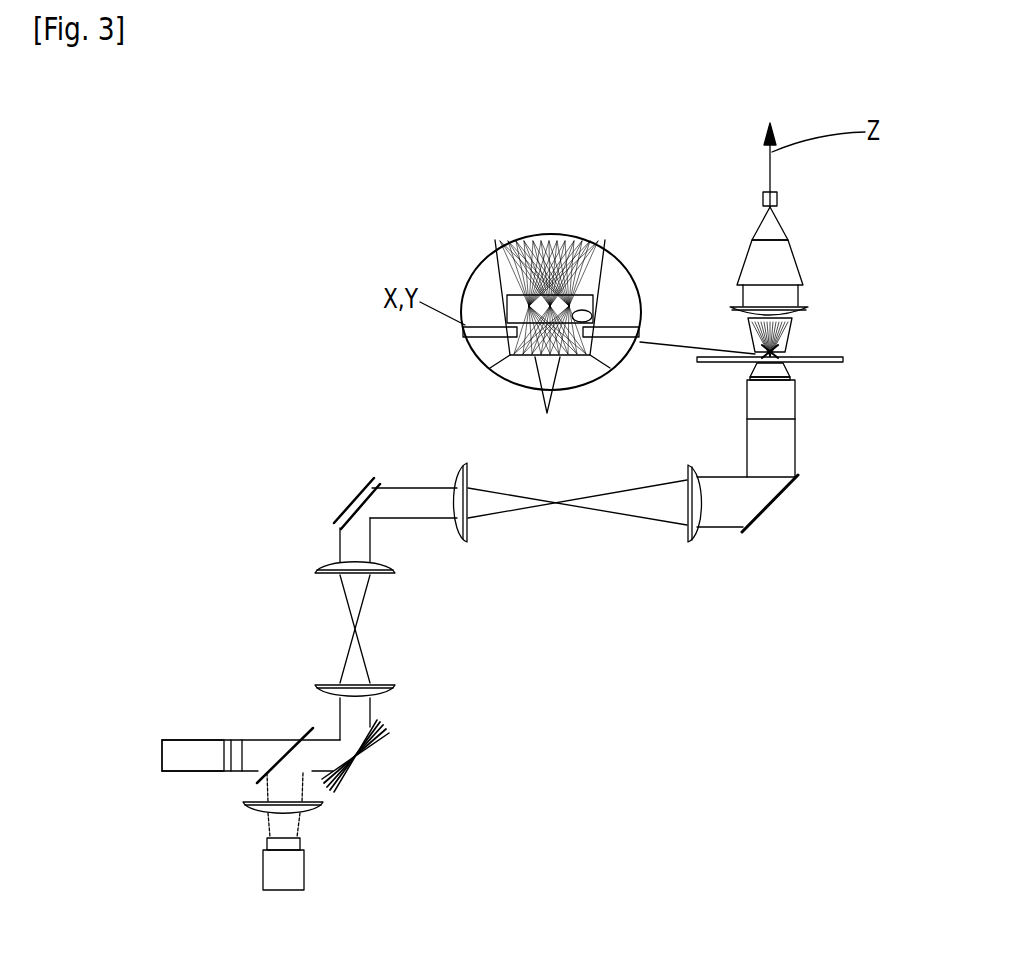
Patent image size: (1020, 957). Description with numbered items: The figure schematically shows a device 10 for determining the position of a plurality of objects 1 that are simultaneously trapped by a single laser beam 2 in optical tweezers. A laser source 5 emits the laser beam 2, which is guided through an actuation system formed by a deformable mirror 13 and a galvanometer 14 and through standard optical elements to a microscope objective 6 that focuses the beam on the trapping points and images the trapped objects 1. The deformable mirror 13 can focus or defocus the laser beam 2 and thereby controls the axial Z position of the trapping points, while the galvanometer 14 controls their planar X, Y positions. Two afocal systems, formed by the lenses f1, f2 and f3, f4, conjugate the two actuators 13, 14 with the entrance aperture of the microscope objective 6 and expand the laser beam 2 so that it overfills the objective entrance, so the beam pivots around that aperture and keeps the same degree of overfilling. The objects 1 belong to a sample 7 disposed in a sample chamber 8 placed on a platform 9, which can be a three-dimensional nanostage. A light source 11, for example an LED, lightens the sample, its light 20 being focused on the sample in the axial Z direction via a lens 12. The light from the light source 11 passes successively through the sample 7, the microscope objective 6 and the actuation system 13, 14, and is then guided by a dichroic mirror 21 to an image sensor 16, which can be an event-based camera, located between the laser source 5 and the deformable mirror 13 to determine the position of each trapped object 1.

The objects 1 is at (547, 401).
The laser beam 2 is at (787, 450).
The laser source 5 is at (183, 740).
The microscope objective 6 is at (792, 402).
The sample 7 is at (580, 287).
The sample chamber 8 is at (583, 305).
The platform 9 is at (838, 351).
The device 10 is at (732, 158).
The light source 11 is at (800, 197).
The lens 12 is at (807, 308).
The deformable mirror 13 is at (377, 771).
The galvanometer 14 is at (335, 486).
The image sensor 16 is at (247, 874).
The light 20 is at (273, 787).
The dichroic mirror 21 is at (308, 730).
The afocal system lens f1 is at (395, 688).
The afocal system lens f2 is at (395, 572).
The afocal system lens f3 is at (465, 461).
The afocal system lens f4 is at (690, 463).